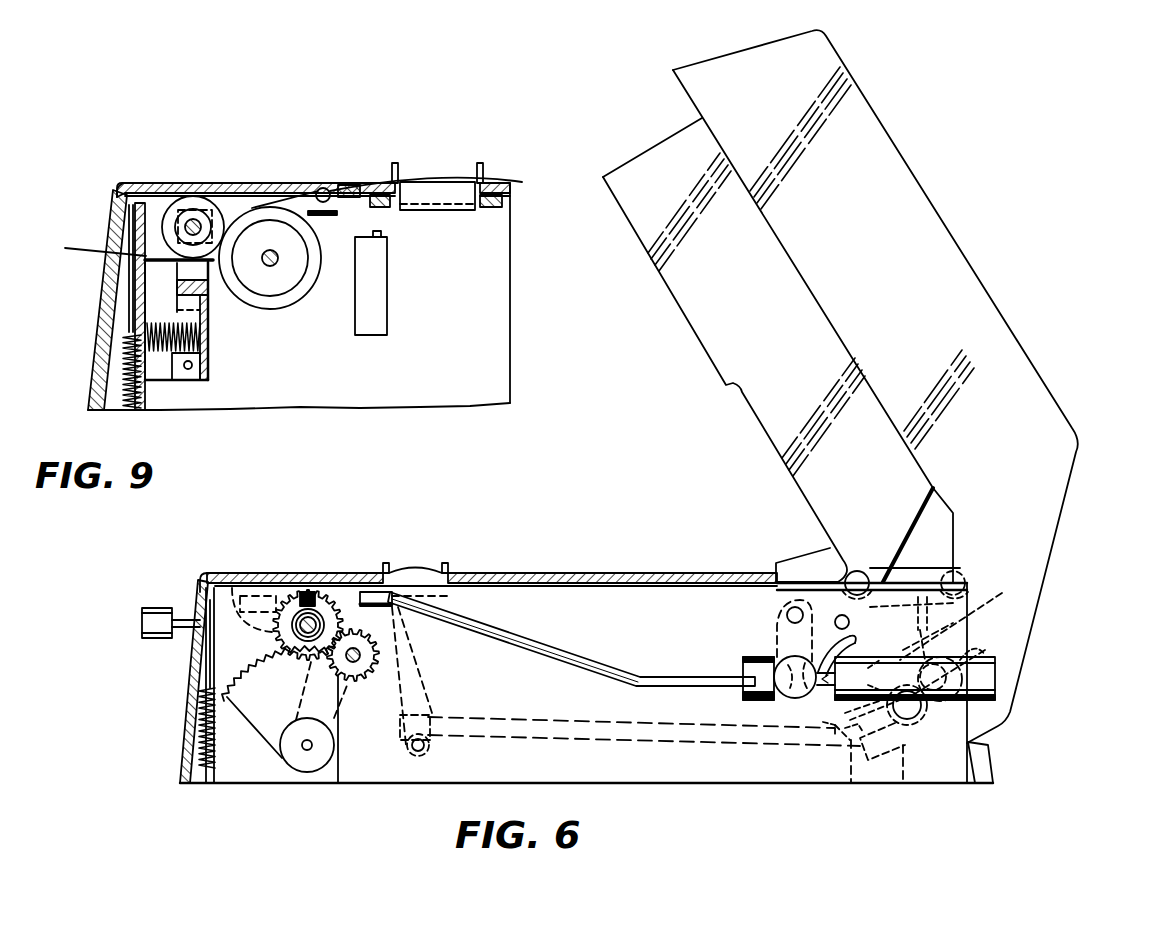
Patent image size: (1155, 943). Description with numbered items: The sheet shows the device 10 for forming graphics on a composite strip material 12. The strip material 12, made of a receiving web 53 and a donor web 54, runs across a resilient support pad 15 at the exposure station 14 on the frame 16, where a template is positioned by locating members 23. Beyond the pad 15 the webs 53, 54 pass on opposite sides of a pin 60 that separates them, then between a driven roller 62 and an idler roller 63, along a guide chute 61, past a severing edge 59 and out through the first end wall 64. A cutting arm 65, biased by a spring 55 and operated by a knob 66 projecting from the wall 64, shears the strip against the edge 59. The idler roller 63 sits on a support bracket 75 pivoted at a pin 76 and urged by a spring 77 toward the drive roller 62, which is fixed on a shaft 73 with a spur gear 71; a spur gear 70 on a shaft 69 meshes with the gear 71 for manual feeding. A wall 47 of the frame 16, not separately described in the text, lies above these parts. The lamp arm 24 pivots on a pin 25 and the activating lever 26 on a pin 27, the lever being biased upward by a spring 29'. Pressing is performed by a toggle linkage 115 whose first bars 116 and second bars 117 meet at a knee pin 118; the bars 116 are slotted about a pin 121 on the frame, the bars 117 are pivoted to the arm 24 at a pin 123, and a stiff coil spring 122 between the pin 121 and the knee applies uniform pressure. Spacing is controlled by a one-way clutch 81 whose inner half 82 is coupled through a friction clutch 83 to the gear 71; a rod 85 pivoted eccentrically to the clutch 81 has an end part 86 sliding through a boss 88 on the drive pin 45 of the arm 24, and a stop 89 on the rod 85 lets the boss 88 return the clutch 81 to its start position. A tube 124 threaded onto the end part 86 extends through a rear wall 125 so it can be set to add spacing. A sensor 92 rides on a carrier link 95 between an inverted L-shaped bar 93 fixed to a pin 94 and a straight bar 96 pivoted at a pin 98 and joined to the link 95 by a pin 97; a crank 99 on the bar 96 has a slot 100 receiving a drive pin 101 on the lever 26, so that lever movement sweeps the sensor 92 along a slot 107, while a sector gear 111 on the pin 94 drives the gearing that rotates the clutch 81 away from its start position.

In FIG. 6, the device for forming graphics 10 is at (197, 562).
In FIG. 9, the composite strip material 12 is at (519, 181).
In FIG. 9, the exposure station 14 is at (447, 172).
In FIG. 6, the exposure station 14 is at (414, 562).
In FIG. 9, the resilient support pad 15 is at (425, 182).
In FIG. 6, the resilient support pad 15 is at (425, 569).
In FIG. 9, the frame 16 is at (511, 377).
In FIG. 6, the frame 16 is at (190, 786).
In FIG. 9, the locating members 23 is at (395, 163).
In FIG. 6, the locating members 23 is at (385, 562).
In FIG. 6, the lamp arm 24 is at (632, 136).
In FIG. 6, the pin 25 is at (786, 614).
In FIG. 6, the activating lever 26 is at (845, 62).
In FIG. 6, the pin 27 is at (915, 679).
In FIG. 6, the spring 29' is at (834, 749).
In FIG. 6, the drive pin 45 is at (778, 648).
In FIG. 9, the top cover 47 is at (141, 183).
In FIG. 6, the top cover 47 is at (646, 572).
In FIG. 9, the receiving web 53 is at (313, 187).
In FIG. 9, the donor web 54 is at (337, 216).
In FIG. 9, the spring 55 is at (124, 408).
In FIG. 6, the spring 55 is at (204, 740).
In FIG. 9, the edge 59 is at (110, 280).
In FIG. 6, the edge 59 is at (204, 634).
In FIG. 9, the pin 60 is at (325, 188).
In FIG. 9, the guide chute 61 is at (179, 320).
In FIG. 9, the driven roller 62 is at (285, 309).
In FIG. 9, the idler roller 63 is at (194, 196).
In FIG. 6, the idler roller 63 is at (233, 570).
In FIG. 9, the first end wall 64 is at (92, 385).
In FIG. 6, the first end wall 64 is at (186, 762).
In FIG. 9, the cutting arm 65 is at (116, 190).
In FIG. 6, the cutting arm 65 is at (199, 580).
In FIG. 6, the knob 66 is at (142, 625).
In FIG. 6, the shaft 69 is at (357, 672).
In FIG. 6, the spur gear 70 is at (348, 692).
In FIG. 6, the spur gear 71 is at (275, 628).
In FIG. 9, the shaft 73 is at (277, 262).
In FIG. 6, the shaft 73 is at (298, 634).
In FIG. 9, the support bracket 75 is at (206, 300).
In FIG. 9, the pin 76 is at (190, 370).
In FIG. 9, the spring 77 is at (165, 352).
In FIG. 6, the one-way clutch 81 is at (286, 588).
In FIG. 6, the inner sleeve-like half 82 is at (304, 590).
In FIG. 6, the friction clutch 83 is at (309, 612).
In FIG. 6, the rod 85 is at (560, 660).
In FIG. 6, the second end part 86 is at (823, 693).
In FIG. 6, the boss 88 is at (790, 700).
In FIG. 6, the stop 89 is at (742, 693).
In FIG. 9, the sensor 92 is at (382, 233).
In FIG. 6, the inverted L-shaped bar 93 is at (300, 687).
In FIG. 6, the pin 94 is at (307, 752).
In FIG. 6, the carrier link 95 is at (398, 641).
In FIG. 6, the straight bar 96 is at (412, 668).
In FIG. 6, the pin 97 is at (440, 597).
In FIG. 6, the pin 98 is at (410, 752).
In FIG. 6, the crank 99 is at (538, 740).
In FIG. 6, the longitudinal slot 100 is at (904, 785).
In FIG. 6, the drive pin 101 is at (852, 785).
In FIG. 9, the slot 107 is at (478, 212).
In FIG. 6, the sector gear 111 is at (254, 733).
In FIG. 6, the toggle linkage 115 is at (975, 588).
In FIG. 6, the first set of bars 116 is at (918, 622).
In FIG. 6, the second set of bars 117 is at (920, 568).
In FIG. 6, the pin 118 is at (962, 568).
In FIG. 6, the pin 121 is at (972, 662).
In FIG. 6, the stiff coil spring 122 is at (972, 633).
In FIG. 6, the pin 123 is at (861, 570).
In FIG. 6, the tube 124 is at (992, 683).
In FIG. 6, the rear wall 125 is at (996, 755).